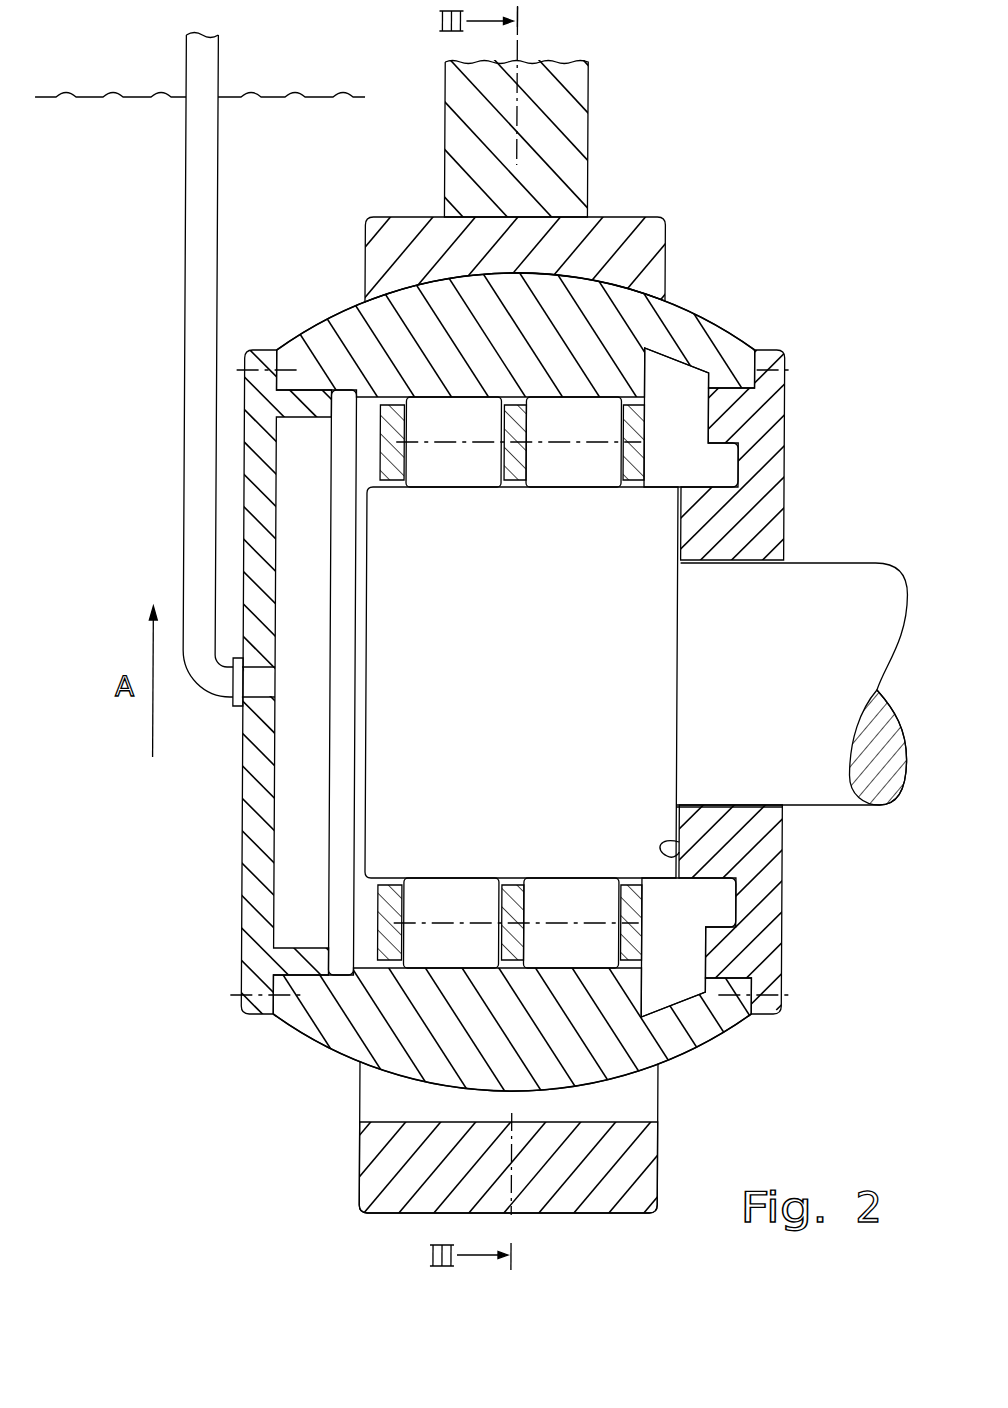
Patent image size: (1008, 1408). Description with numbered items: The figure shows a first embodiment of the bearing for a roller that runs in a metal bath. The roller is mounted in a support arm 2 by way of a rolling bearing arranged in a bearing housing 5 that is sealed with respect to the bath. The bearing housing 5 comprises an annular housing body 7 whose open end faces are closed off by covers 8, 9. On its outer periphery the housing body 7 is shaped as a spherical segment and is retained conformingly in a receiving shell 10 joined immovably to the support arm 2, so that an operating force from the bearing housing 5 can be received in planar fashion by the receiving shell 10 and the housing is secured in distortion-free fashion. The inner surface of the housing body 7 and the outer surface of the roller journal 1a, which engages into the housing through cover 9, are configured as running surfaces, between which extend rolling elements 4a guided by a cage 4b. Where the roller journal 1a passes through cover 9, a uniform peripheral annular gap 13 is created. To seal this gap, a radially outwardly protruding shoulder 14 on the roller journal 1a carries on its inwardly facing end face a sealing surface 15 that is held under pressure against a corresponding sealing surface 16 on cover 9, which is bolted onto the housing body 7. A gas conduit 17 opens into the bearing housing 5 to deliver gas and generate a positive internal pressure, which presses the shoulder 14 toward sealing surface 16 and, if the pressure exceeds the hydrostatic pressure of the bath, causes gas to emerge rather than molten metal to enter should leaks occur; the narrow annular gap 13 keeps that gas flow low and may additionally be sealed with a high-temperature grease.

The roller journal 1a is at (806, 569).
The support arm 2 is at (457, 97).
The rolling elements 4a is at (420, 900).
The cage 4b is at (492, 962).
The bearing housing 5 is at (740, 337).
The housing body 7 is at (329, 330).
The cover 8 is at (242, 403).
The cover 9 is at (784, 514).
The receiving shell 10 is at (386, 226).
The annular gap 13 is at (745, 812).
The shoulder 14 is at (548, 700).
The sealing surface 15 is at (745, 907).
The sealing surface 16 is at (693, 848).
The gas conduit 17 is at (186, 511).